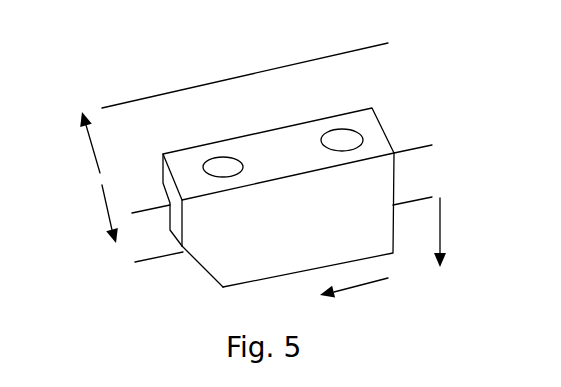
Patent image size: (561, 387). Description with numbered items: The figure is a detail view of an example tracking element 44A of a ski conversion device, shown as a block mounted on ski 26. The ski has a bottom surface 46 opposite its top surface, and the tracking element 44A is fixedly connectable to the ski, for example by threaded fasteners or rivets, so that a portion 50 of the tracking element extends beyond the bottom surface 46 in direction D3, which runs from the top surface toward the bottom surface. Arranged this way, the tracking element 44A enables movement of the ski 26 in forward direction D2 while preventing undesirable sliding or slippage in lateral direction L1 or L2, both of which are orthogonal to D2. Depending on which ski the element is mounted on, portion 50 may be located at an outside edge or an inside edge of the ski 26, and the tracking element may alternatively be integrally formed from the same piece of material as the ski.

The ski 26 is at (195, 70).
The tracking element 44A is at (240, 116).
The bottom surface 46 is at (162, 258).
The portion 50 is at (202, 266).
The lateral direction L1 is at (95, 159).
The lateral direction L2 is at (108, 213).
The forward direction D2 is at (367, 287).
The direction D3 is at (440, 224).